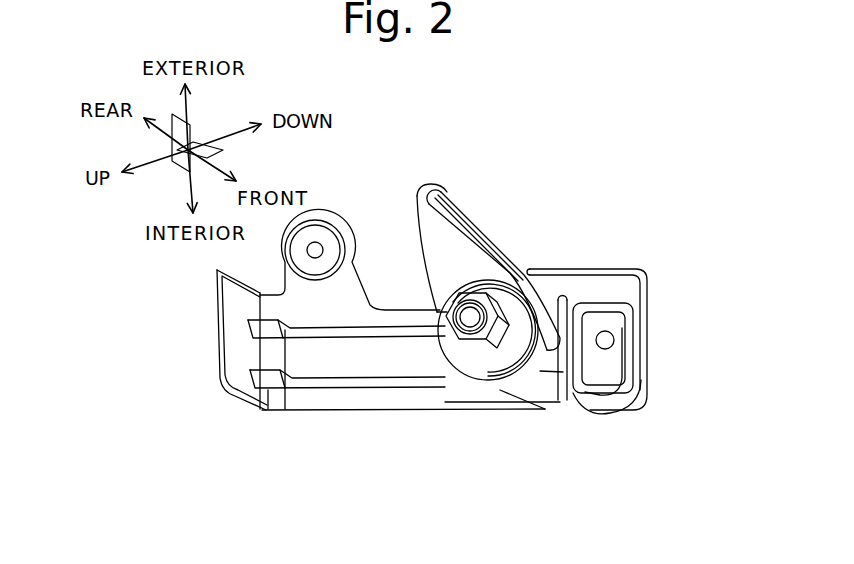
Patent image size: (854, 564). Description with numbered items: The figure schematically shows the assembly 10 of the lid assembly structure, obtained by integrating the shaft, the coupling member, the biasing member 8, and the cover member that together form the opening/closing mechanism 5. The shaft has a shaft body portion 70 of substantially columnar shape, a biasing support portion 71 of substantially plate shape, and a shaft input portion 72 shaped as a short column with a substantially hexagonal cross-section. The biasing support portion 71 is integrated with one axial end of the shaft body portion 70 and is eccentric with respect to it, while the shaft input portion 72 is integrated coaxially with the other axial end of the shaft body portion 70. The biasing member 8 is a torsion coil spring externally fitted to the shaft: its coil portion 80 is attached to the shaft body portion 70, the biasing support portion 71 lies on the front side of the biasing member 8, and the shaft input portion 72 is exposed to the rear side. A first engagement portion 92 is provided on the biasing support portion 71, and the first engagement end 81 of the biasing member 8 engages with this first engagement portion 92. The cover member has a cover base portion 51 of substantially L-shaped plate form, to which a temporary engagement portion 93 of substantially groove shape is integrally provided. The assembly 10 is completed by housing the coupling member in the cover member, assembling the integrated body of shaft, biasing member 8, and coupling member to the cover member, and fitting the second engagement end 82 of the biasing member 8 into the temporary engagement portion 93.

The opening/closing mechanism 5 is at (265, 408).
The cover base portion 51 is at (310, 403).
The biasing member 8 is at (464, 267).
The biasing support portion 71 is at (440, 249).
The first engagement end 81 is at (464, 269).
The first engagement portion 92 is at (447, 227).
The coil portion 80 is at (442, 337).
The shaft input portion 72 is at (480, 338).
The shaft body portion 70 is at (497, 353).
The temporary engagement portion 93 is at (557, 348).
The second engagement end 82 is at (565, 395).
The assembly 10 is at (615, 329).